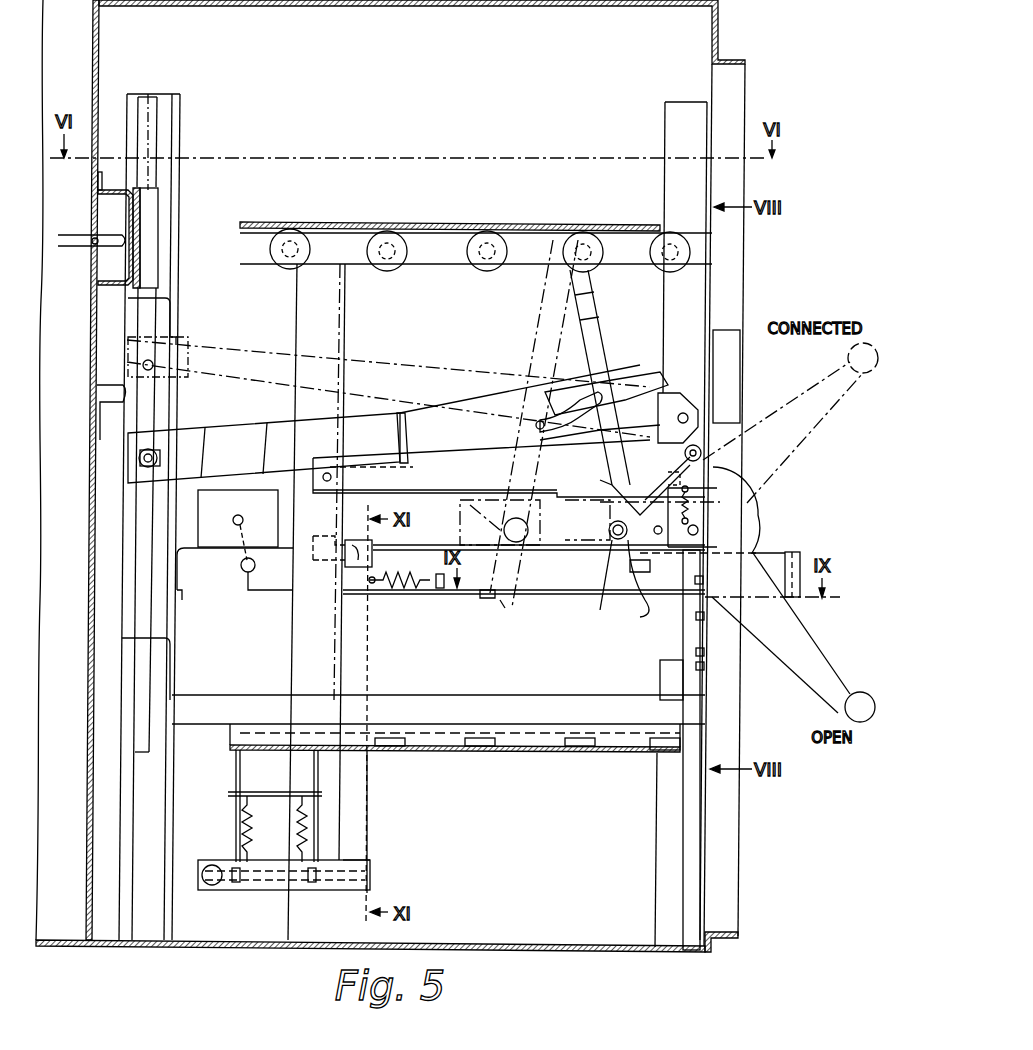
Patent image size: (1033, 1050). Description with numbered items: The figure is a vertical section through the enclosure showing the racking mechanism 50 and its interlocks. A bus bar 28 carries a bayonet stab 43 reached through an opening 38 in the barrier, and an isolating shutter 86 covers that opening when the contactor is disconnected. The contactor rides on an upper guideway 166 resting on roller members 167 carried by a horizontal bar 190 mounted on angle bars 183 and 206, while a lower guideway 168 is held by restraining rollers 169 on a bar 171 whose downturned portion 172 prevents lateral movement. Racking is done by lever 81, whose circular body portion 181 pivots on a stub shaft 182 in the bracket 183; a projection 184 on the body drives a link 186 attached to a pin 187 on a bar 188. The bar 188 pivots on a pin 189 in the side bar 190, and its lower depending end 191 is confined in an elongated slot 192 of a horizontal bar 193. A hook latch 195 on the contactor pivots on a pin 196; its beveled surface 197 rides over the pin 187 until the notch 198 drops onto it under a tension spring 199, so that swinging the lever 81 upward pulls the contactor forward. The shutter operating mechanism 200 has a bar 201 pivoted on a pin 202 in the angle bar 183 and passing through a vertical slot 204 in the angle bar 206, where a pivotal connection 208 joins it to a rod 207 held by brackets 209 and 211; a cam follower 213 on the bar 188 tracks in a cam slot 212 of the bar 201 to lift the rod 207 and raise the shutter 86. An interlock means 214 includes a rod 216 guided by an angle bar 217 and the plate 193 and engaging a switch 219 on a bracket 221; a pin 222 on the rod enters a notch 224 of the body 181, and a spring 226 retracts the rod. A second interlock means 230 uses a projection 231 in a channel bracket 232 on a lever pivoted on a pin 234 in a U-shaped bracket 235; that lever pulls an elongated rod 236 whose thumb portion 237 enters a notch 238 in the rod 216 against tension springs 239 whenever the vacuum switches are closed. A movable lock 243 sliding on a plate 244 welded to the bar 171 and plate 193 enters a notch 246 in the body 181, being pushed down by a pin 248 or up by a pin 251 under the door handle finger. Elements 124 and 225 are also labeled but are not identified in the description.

The main power bus bar 28 is at (62, 236).
The opening 38 is at (93, 243).
The bayonet stab 43 is at (118, 235).
The racking mechanism 50 is at (452, 222).
The lever 81 is at (852, 370).
The isolating shutter 86 is at (142, 226).
The stop bracket 124 is at (99, 388).
The guideway 166 is at (346, 221).
The roller members 167 is at (407, 268).
The lower guideway 168 is at (504, 750).
The restraining rollers 169 is at (400, 740).
The horizontal bar 171 is at (516, 702).
The downwardly extending portion 172 is at (230, 734).
The circular body portion 181 is at (756, 518).
The stub shaft 182 is at (700, 524).
The angle bar 183 is at (664, 115).
The projection 184 is at (702, 455).
The link 186 is at (660, 495).
The pin 187 is at (610, 500).
The bar 188 is at (600, 343).
The pin 189 is at (567, 248).
The horizontal side bar 190 is at (519, 264).
The lower depending end 191 is at (645, 618).
The elongated slot 192 is at (500, 605).
The horizontal bar 193 is at (454, 590).
The hook latch 195 is at (575, 545).
The pin 196 is at (695, 533).
The beveled leading surface 197 is at (590, 550).
The notch 198 is at (602, 590).
The tension spring 199 is at (688, 493).
The shutter operating mechanism 200 is at (195, 425).
The bar 201 is at (435, 412).
The pin 202 is at (688, 392).
The elongated vertical slot 204 is at (178, 343).
The structural angle bar 206 is at (182, 112).
The vertically movable rod 207 is at (150, 629).
The pivotal connection 208 is at (138, 458).
The bracket 209 is at (130, 640).
The bracket 211 is at (176, 300).
The cam slot 212 is at (535, 430).
The cam follower 213 is at (598, 393).
The interlock means 214 is at (430, 545).
The rod 216 is at (790, 552).
The structural angle bar 217 is at (348, 320).
The switch 219 is at (224, 509).
The bracket 221 is at (182, 583).
The pin 222 is at (650, 600).
The notch 224 is at (705, 487).
The pad 225 is at (635, 574).
The spring 226 is at (410, 590).
The interlock means 230 is at (226, 824).
The projection 231 is at (206, 882).
The channel bracket 232 is at (330, 890).
The pin 234 is at (273, 880).
The U-shaped bracket 235 is at (234, 770).
The elongated rod 236 is at (368, 801).
The thumb portion 237 is at (378, 553).
The notch 238 is at (348, 572).
The tension springs 239 is at (274, 829).
The movable lock 243 is at (705, 666).
The plate 244 is at (680, 682).
The notch 246 is at (703, 582).
The pin 248 is at (705, 652).
The pin 251 is at (704, 616).